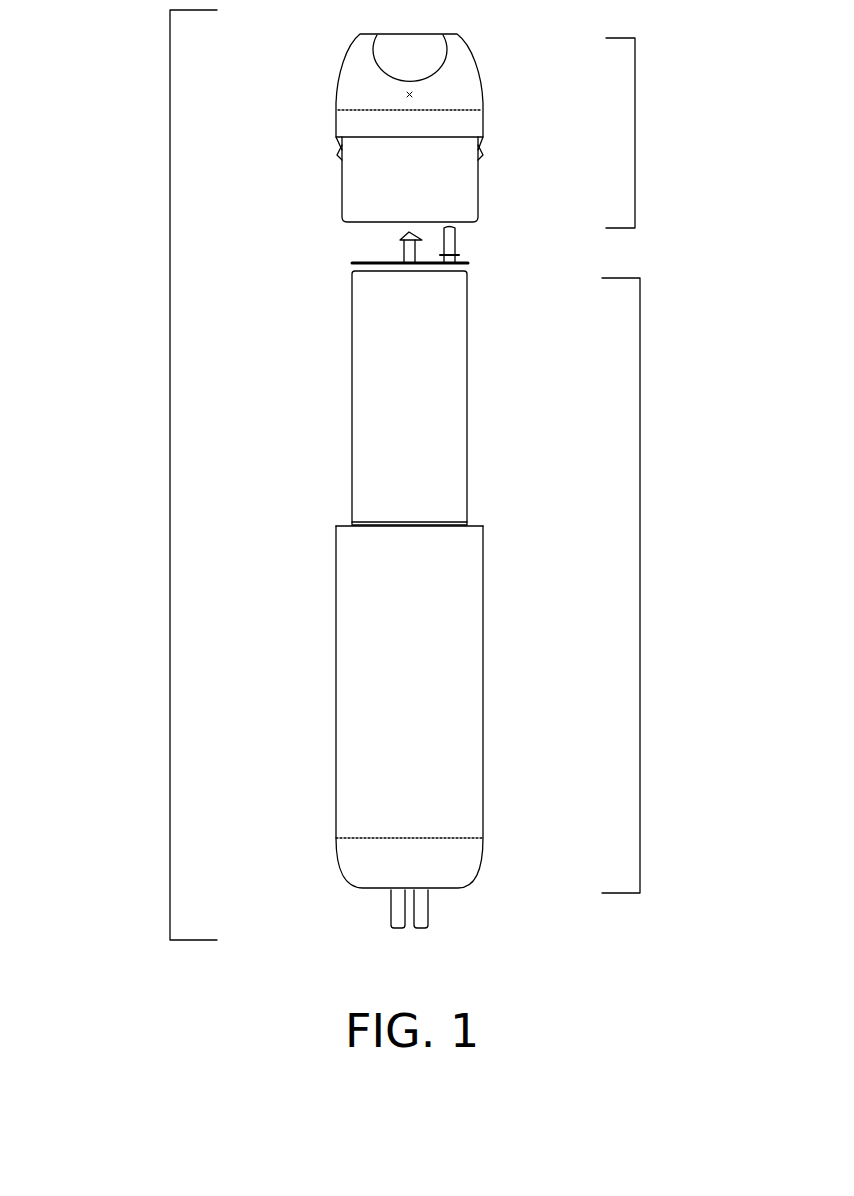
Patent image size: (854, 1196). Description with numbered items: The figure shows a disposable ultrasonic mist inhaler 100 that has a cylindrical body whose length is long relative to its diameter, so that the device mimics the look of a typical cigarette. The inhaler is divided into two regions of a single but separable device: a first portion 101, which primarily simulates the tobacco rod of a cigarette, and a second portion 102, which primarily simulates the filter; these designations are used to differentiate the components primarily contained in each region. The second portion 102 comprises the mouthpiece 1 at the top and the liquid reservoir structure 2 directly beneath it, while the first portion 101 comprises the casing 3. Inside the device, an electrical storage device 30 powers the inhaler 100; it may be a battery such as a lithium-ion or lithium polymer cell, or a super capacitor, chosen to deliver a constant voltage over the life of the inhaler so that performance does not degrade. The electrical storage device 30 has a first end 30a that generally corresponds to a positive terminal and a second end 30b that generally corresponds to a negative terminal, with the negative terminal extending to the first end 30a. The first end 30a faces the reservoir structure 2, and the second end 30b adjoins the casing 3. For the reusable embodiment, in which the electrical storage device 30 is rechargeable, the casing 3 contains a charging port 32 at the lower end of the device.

The ultrasonic mist inhaler 100 is at (170, 115).
The first portion 101 is at (640, 587).
The second portion 102 is at (635, 133).
The mouthpiece 1 is at (322, 76).
The liquid reservoir structure 2 is at (310, 142).
The first end 30a is at (340, 268).
The electrical storage device 30 is at (323, 428).
The second end 30b is at (343, 498).
The casing 3 is at (323, 723).
The charging port 32 is at (390, 905).